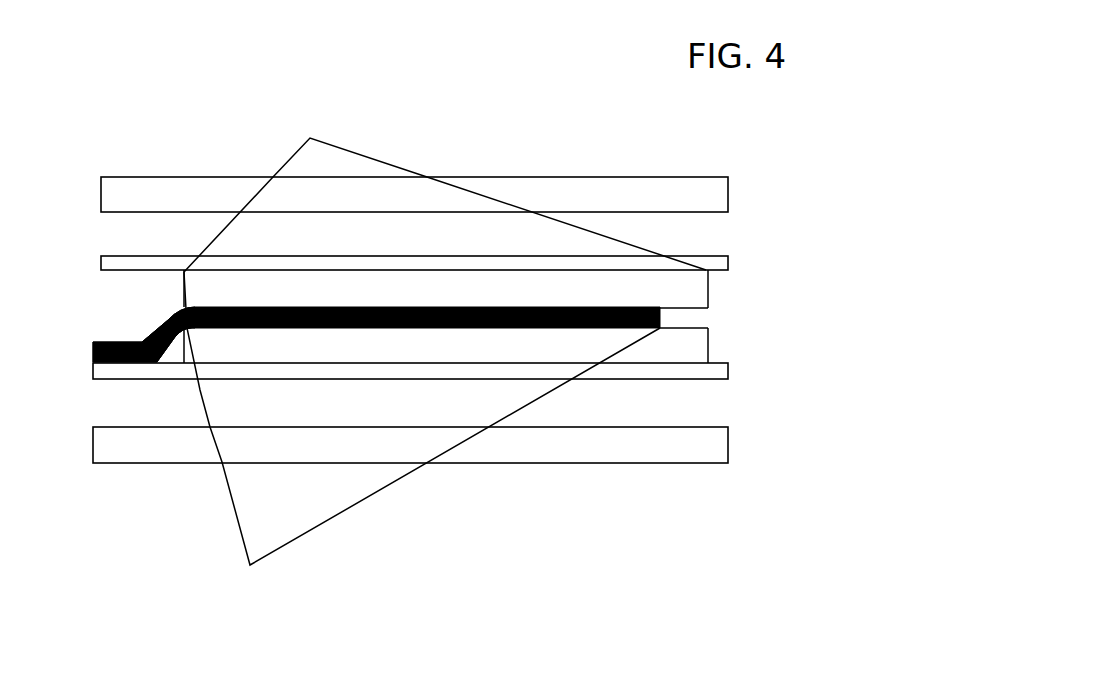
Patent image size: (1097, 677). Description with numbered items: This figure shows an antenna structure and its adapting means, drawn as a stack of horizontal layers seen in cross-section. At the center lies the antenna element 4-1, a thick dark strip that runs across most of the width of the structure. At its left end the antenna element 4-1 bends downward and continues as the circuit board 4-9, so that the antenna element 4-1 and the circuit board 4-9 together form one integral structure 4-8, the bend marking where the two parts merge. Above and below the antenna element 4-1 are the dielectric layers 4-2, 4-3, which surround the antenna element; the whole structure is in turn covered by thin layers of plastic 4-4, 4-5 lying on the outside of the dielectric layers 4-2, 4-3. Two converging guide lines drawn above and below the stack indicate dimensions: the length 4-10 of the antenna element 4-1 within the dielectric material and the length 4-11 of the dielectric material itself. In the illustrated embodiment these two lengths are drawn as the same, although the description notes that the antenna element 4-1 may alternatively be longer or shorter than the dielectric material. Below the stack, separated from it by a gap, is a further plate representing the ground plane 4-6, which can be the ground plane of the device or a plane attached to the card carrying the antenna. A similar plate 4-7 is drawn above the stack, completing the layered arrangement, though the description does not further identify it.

The antenna element 4-1 is at (660, 317).
The dielectric layer 4-2 is at (693, 292).
The dielectric layer 4-3 is at (693, 345).
The thin layer of plastic 4-4 is at (729, 266).
The thin layer of plastic 4-5 is at (729, 376).
The ground plane 4-6 is at (560, 463).
The top plate 4-7 is at (729, 198).
The integral structure 4-8 is at (167, 318).
The circuit board 4-9 is at (93, 348).
The length of the antenna element 4-10 is at (250, 573).
The length of the dielectric material 4-11 is at (310, 138).